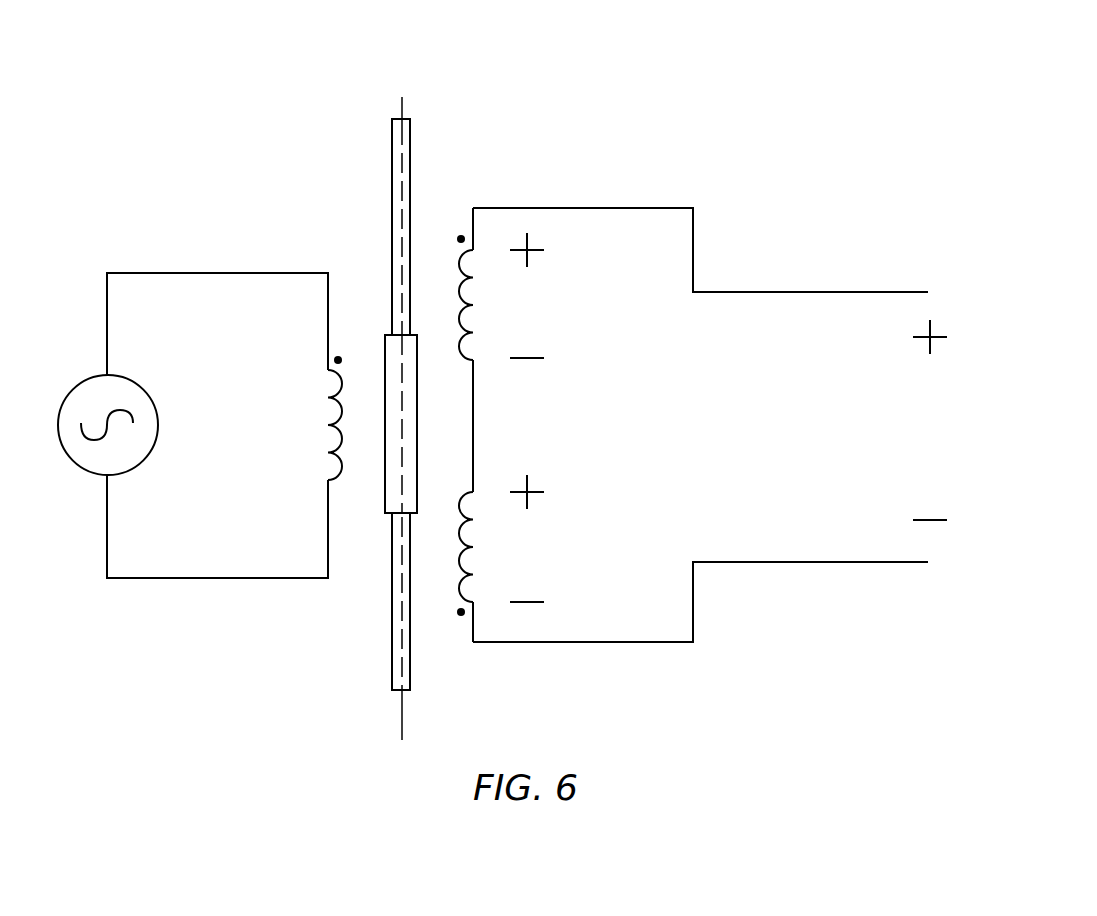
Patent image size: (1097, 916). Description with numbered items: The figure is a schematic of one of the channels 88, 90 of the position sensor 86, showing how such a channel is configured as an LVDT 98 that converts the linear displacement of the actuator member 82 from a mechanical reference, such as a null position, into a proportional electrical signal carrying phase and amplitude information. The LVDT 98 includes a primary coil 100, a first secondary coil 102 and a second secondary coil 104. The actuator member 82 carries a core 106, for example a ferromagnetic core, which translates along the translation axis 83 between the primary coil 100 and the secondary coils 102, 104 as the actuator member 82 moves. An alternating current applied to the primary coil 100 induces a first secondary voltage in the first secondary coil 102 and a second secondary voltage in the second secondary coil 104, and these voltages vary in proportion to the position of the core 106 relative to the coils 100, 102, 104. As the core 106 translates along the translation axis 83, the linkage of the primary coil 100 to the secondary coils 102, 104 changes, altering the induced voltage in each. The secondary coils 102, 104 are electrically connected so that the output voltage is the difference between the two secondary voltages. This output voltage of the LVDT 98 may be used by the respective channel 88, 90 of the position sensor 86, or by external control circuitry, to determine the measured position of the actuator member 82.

The actuator member 82 is at (410, 159).
The translation axis 83 is at (402, 106).
The position sensor 86 is at (850, 135).
The first channel 88 is at (549, 340).
The second channel 90 is at (549, 340).
The LVDT 98 is at (345, 223).
The primary coil 100 is at (322, 428).
The first secondary coil 102 is at (492, 313).
The second secondary coil 104 is at (490, 539).
The core 106 is at (395, 480).